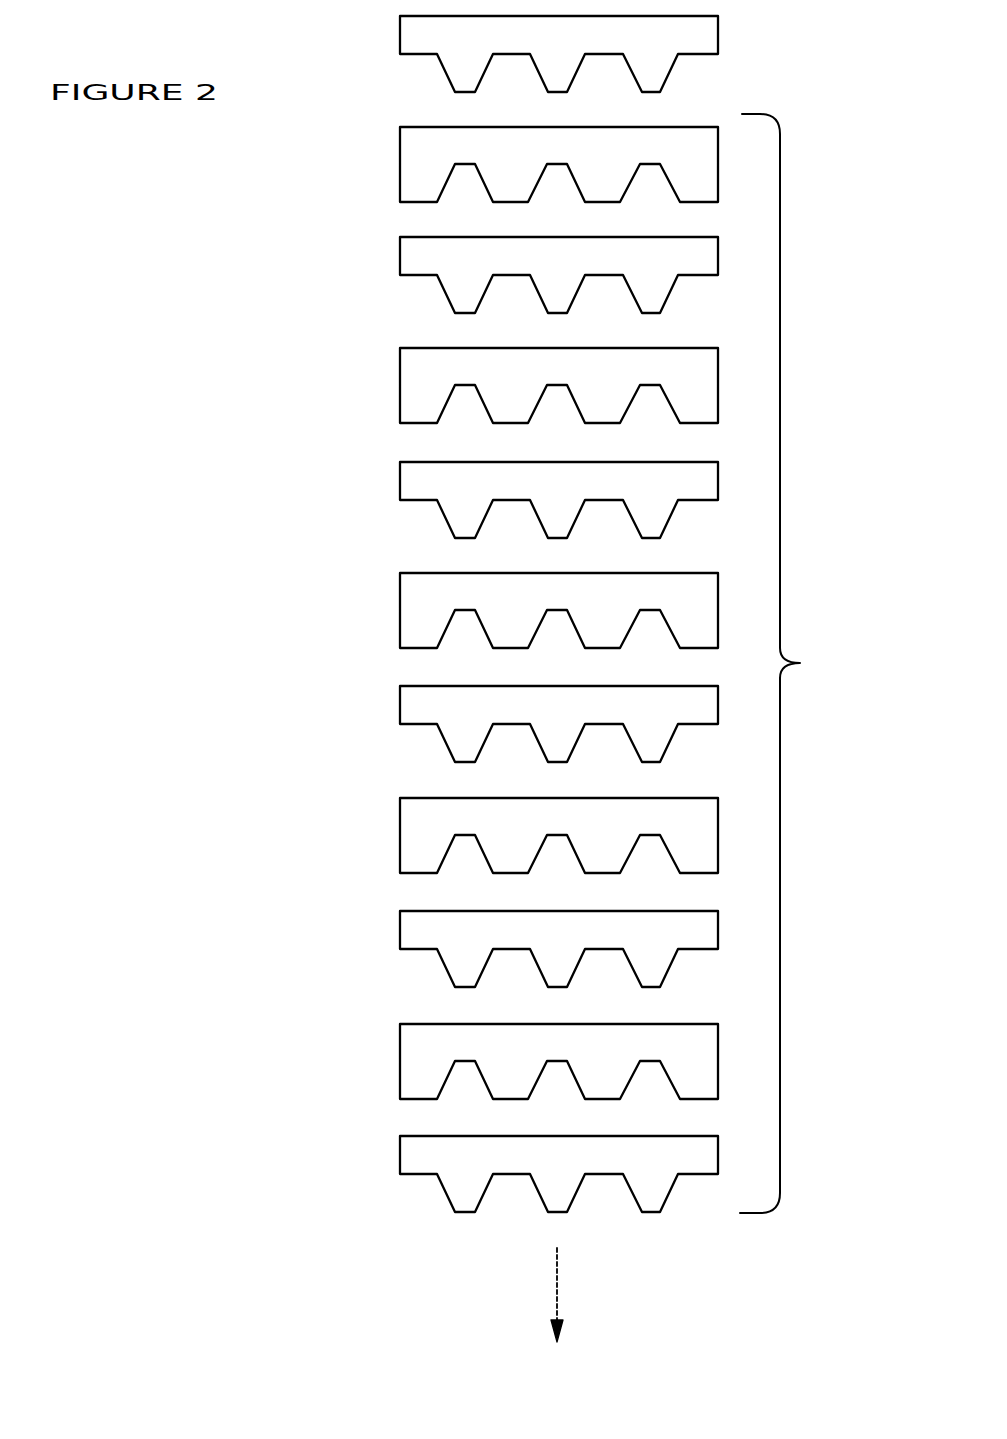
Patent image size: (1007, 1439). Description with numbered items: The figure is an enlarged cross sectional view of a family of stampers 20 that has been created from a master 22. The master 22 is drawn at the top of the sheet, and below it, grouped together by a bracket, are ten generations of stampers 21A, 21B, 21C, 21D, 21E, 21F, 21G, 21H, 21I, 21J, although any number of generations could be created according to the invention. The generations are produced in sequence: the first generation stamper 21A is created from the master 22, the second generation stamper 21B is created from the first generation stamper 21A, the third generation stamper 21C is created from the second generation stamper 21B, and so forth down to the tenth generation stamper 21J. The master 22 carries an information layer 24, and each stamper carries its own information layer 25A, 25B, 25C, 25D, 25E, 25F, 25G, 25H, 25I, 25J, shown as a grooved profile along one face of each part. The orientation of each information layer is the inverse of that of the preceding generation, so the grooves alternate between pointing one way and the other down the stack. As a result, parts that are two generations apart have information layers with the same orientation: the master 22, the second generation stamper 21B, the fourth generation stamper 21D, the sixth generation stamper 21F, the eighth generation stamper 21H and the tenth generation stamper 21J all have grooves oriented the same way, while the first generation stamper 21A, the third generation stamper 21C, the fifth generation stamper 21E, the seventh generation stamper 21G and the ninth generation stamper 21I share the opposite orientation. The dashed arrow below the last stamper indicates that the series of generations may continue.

The family of stampers 20 is at (818, 668).
The master 22 is at (537, 54).
The information layer 24 is at (422, 71).
The first generation stamper 21A is at (515, 164).
The second generation stamper 21B is at (536, 275).
The third generation stamper 21C is at (515, 385).
The fourth generation stamper 21D is at (536, 500).
The fifth generation stamper 21E is at (515, 610).
The sixth generation stamper 21F is at (536, 724).
The seventh generation stamper 21G is at (515, 835).
The eighth generation stamper 21H is at (536, 949).
The ninth generation stamper 21I is at (515, 1061).
The tenth generation stamper 21J is at (536, 1174).
The information layer 25A is at (388, 184).
The information layer 25B is at (427, 294).
The information layer 25C is at (388, 405).
The information layer 25D is at (427, 519).
The information layer 25E is at (388, 630).
The information layer 25F is at (427, 743).
The information layer 25G is at (388, 855).
The information layer 25H is at (427, 968).
The information layer 25I is at (388, 1081).
The information layer 25J is at (427, 1193).